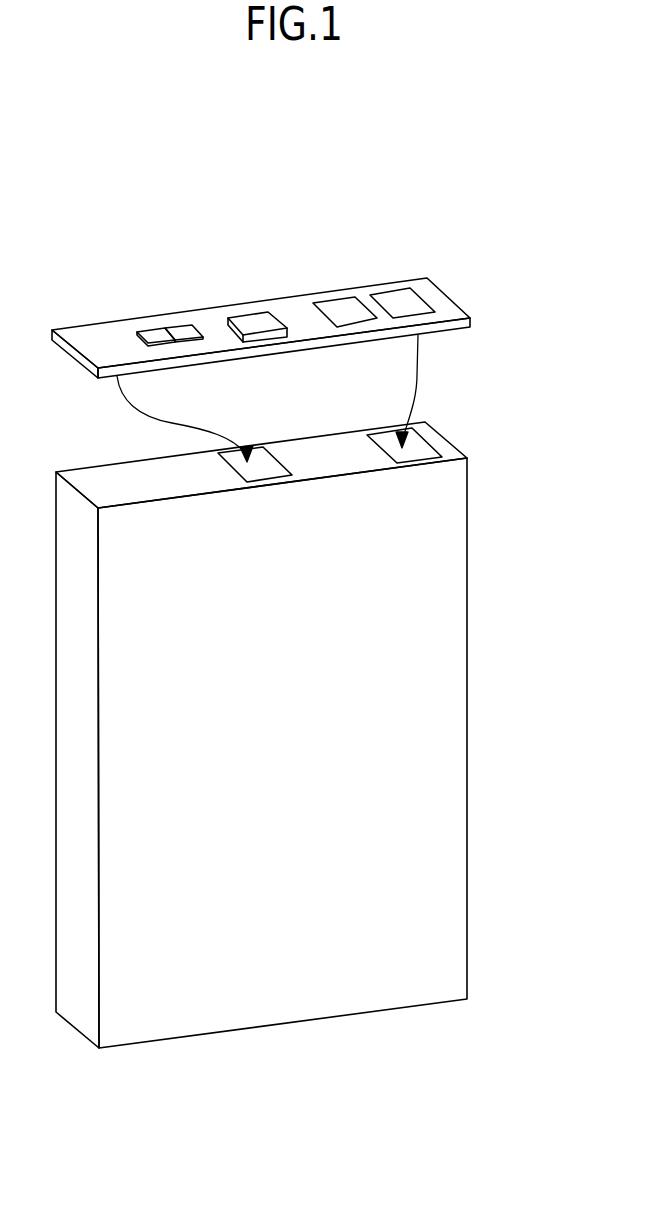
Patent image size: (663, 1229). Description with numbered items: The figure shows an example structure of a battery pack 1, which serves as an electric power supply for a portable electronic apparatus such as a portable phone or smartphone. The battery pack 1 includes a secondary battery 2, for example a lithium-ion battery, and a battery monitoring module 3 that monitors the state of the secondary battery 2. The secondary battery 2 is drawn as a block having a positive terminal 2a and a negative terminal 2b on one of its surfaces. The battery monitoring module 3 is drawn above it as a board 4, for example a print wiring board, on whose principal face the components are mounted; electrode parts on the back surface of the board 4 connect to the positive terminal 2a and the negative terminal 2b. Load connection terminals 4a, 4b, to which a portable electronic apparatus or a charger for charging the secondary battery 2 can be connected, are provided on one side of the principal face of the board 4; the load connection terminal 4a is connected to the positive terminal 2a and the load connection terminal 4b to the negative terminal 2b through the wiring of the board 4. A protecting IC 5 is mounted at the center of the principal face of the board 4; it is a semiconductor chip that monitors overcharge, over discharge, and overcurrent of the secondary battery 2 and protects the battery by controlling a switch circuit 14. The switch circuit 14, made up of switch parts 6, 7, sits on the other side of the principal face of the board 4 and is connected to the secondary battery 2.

The battery pack 1 is at (520, 246).
The secondary battery 2 is at (442, 657).
The positive terminal 2a is at (388, 440).
The negative terminal 2b is at (257, 455).
The battery monitoring module 3 is at (271, 287).
The board 4 is at (442, 313).
The load connection terminal 4a is at (402, 297).
The load connection terminal 4b is at (345, 305).
The protecting integrated circuit 5 is at (258, 320).
The switch part 6 is at (185, 330).
The switch part 7 is at (152, 330).
The switch circuit 14 is at (163, 271).